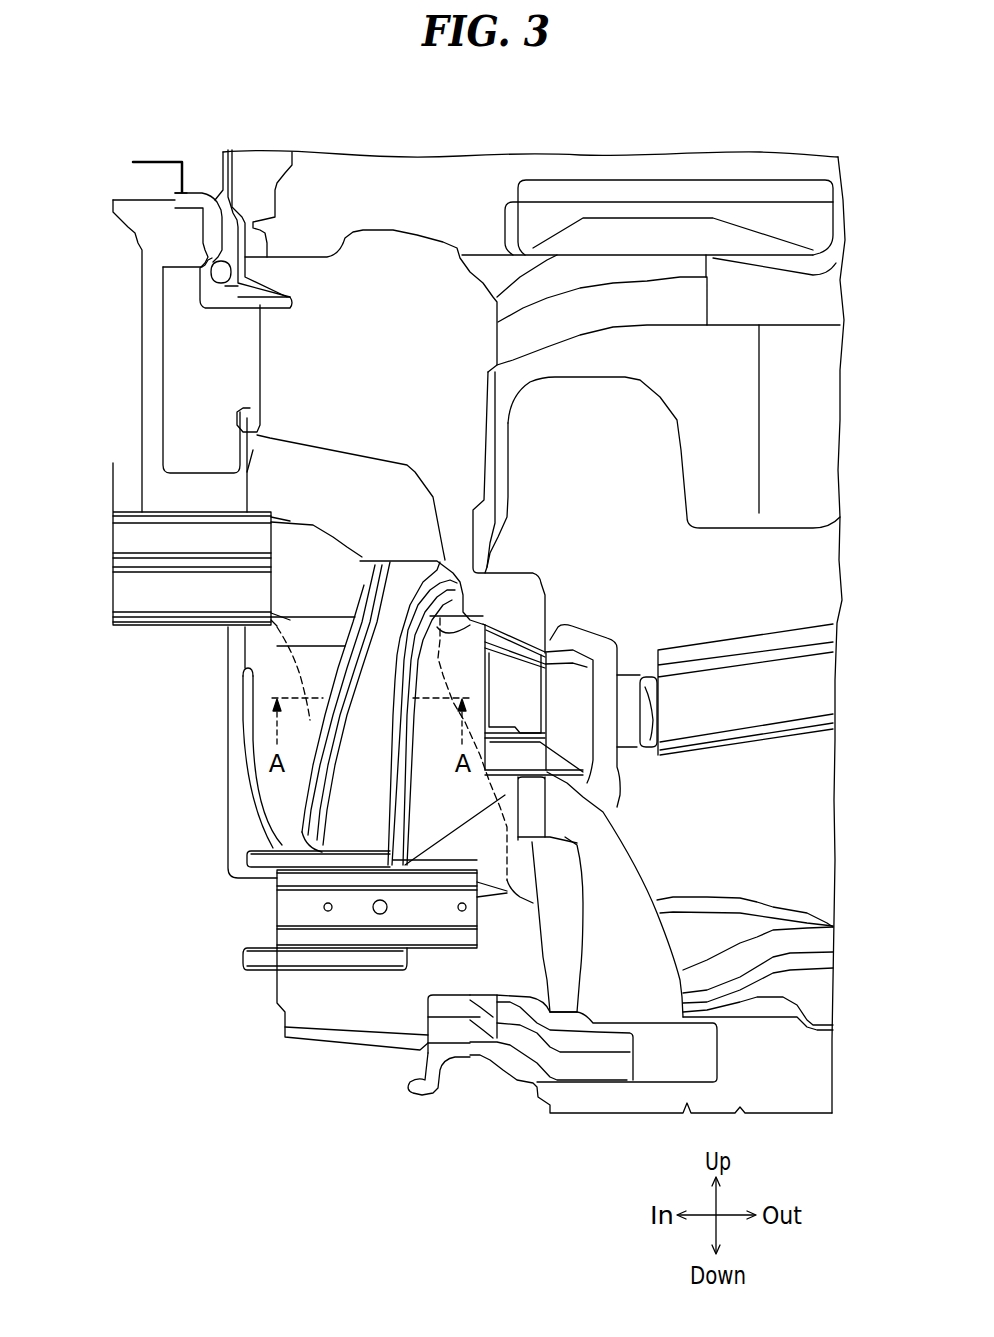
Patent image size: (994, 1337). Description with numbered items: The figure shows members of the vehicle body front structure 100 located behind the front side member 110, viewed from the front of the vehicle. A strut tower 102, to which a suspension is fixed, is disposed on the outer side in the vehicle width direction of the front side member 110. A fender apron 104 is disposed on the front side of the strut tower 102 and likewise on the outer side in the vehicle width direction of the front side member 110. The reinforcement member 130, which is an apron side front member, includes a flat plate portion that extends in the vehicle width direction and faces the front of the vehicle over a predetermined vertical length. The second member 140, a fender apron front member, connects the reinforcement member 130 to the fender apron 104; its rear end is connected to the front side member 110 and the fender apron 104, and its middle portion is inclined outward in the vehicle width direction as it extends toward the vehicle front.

The vehicle body front structure 100 is at (196, 1057).
The strut tower 102 is at (380, 352).
The fender apron 104 is at (273, 485).
The front side member 110 is at (528, 702).
The reinforcement member 130 is at (293, 903).
The second member 140 is at (340, 788).